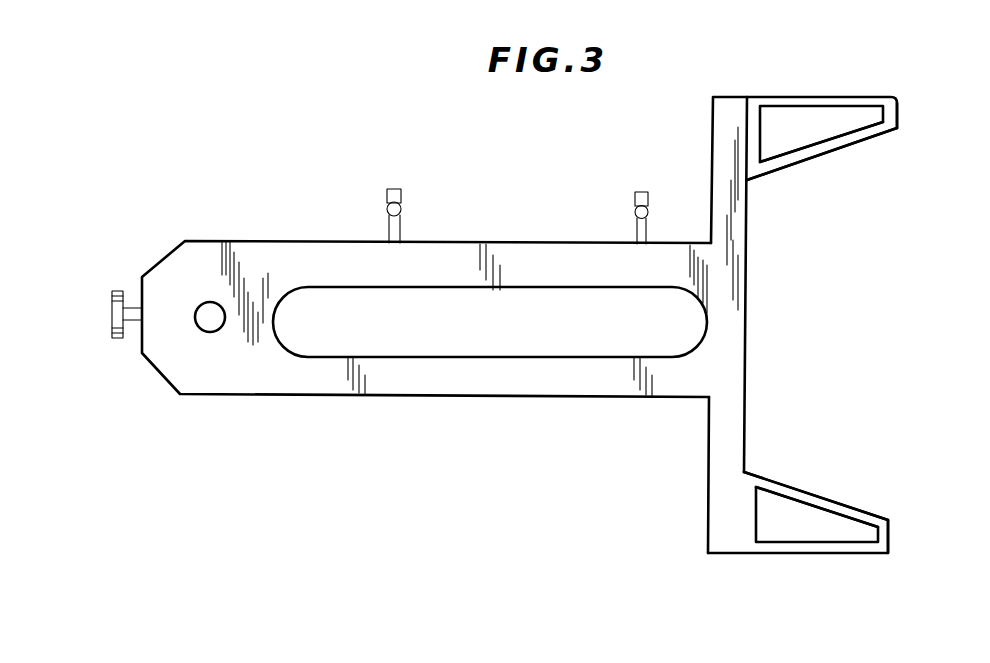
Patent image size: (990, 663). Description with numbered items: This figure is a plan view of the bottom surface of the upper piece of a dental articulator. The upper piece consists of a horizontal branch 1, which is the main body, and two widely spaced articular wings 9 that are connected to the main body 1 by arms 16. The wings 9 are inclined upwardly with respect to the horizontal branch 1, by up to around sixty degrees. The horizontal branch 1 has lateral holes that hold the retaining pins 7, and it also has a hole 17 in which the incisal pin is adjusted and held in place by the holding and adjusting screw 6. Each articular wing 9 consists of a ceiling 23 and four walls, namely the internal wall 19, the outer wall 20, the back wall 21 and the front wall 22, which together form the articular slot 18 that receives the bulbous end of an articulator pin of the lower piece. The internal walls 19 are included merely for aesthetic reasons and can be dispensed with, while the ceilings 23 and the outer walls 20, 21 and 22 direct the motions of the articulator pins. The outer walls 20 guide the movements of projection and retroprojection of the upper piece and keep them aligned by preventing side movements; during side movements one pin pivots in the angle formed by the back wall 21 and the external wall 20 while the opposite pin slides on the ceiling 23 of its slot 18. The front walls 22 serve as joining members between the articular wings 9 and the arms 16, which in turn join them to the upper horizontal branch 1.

The horizontal branch 1 is at (474, 260).
The holding and adjusting screw 6 is at (116, 314).
The retaining pins 7 is at (387, 208).
The articular wings 9 is at (822, 101).
The arms 16 is at (718, 196).
The hole 17 is at (218, 330).
The articular slots 18 is at (792, 142).
The internal walls 19 is at (865, 135).
The outer walls 20 is at (792, 550).
The back walls 21 is at (895, 113).
The front walls 22 is at (773, 110).
The ceiling 23 is at (867, 113).